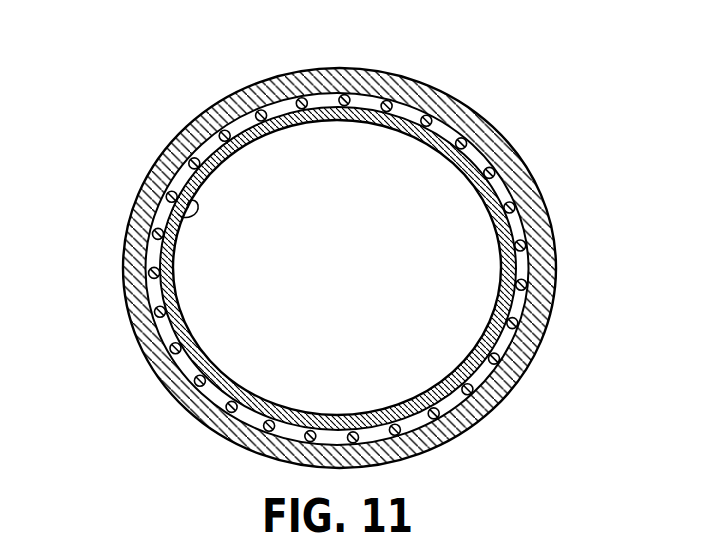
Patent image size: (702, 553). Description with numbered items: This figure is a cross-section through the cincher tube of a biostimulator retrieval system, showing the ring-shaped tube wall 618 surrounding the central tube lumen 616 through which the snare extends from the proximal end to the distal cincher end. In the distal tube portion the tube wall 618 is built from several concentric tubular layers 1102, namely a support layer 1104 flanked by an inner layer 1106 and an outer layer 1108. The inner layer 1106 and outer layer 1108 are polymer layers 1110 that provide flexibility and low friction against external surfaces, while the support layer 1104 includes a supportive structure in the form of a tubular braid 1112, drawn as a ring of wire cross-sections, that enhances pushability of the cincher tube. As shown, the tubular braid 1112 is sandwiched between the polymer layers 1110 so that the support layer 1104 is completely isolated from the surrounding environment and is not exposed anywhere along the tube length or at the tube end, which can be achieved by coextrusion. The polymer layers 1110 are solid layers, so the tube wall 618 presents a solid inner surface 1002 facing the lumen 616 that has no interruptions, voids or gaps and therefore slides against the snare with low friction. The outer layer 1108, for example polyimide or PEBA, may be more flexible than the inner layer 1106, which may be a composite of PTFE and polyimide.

The tube lumen 616 is at (223, 292).
The tube wall 618 is at (365, 242).
The inner surface 1002 is at (178, 214).
The tubular layers 1102 is at (365, 242).
The support layer 1104 is at (460, 146).
The inner layer 1106 is at (334, 104).
The outer layer 1108 is at (443, 108).
The polymer layers 1110 is at (342, 242).
The tubular braid 1112 is at (380, 268).